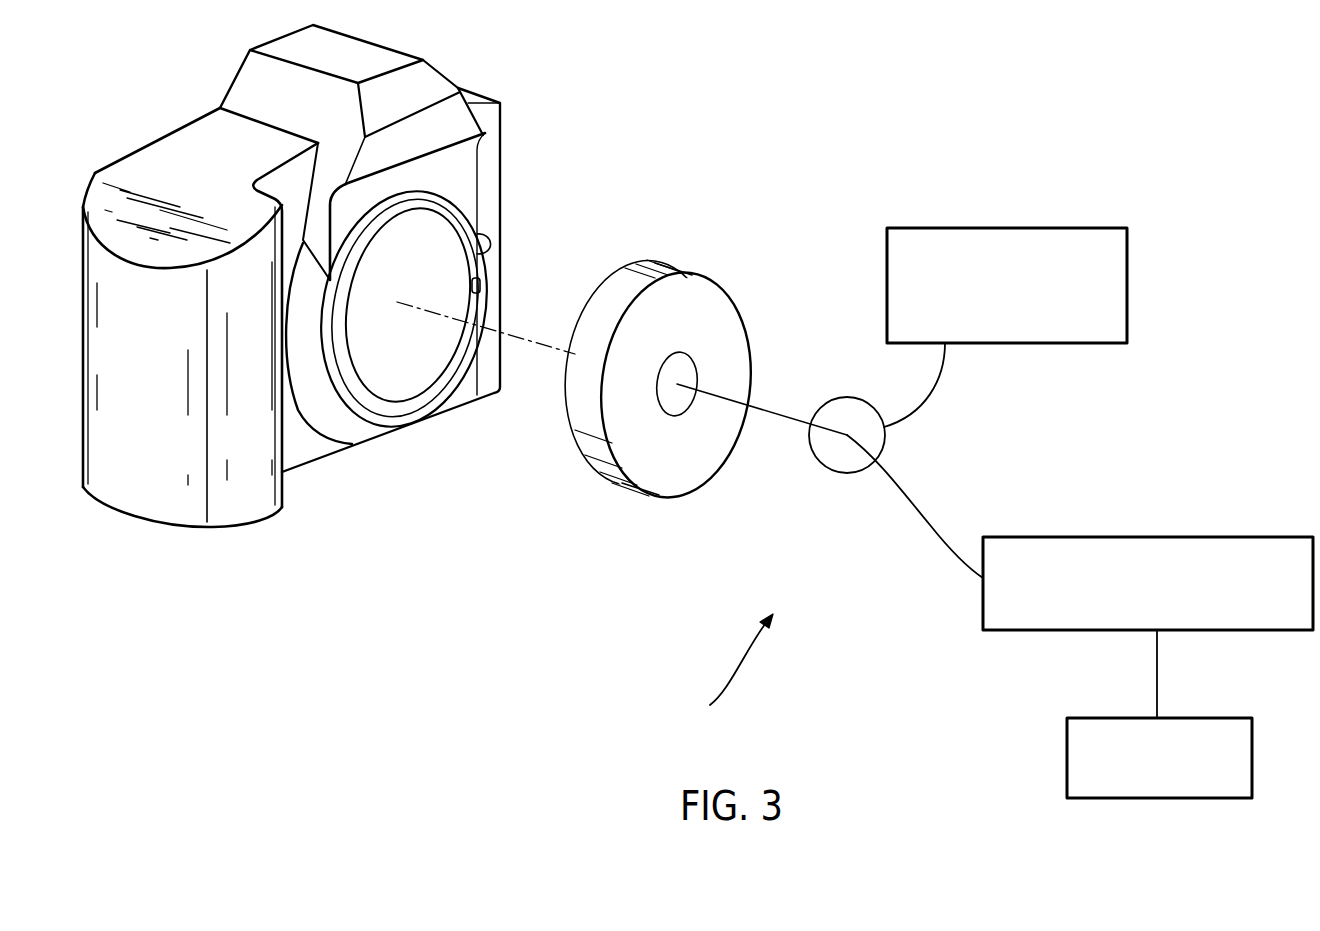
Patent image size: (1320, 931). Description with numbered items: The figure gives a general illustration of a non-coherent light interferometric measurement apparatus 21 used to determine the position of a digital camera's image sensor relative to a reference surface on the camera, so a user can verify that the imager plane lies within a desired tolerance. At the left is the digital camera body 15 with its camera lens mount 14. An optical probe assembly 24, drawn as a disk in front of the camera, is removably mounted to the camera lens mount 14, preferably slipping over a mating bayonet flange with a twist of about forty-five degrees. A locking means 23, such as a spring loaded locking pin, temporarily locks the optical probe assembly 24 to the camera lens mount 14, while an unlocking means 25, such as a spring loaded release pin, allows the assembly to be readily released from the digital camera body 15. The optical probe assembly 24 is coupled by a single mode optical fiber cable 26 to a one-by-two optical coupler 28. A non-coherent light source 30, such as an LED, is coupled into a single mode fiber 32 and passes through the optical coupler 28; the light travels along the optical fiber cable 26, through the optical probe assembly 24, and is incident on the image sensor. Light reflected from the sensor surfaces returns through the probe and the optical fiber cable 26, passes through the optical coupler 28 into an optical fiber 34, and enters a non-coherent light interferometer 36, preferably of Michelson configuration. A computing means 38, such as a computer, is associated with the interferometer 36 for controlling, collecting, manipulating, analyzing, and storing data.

The camera lens mount 14 is at (452, 207).
The digital camera body 15 is at (187, 526).
The non-coherent light interferometric measurement apparatus 21 is at (726, 668).
The locking means 23 is at (480, 283).
The optical probe assembly 24 is at (730, 288).
The unlocking means 25 is at (495, 240).
The single mode optical fiber cable 26 is at (780, 417).
The 1×2 optical coupler 28 is at (887, 445).
The non-coherent light source 30 is at (1045, 227).
The single mode fiber 32 is at (917, 408).
The optical fiber 34 is at (917, 517).
The non-coherent light interferometer 36 is at (1195, 536).
The computing means 38 is at (1217, 717).